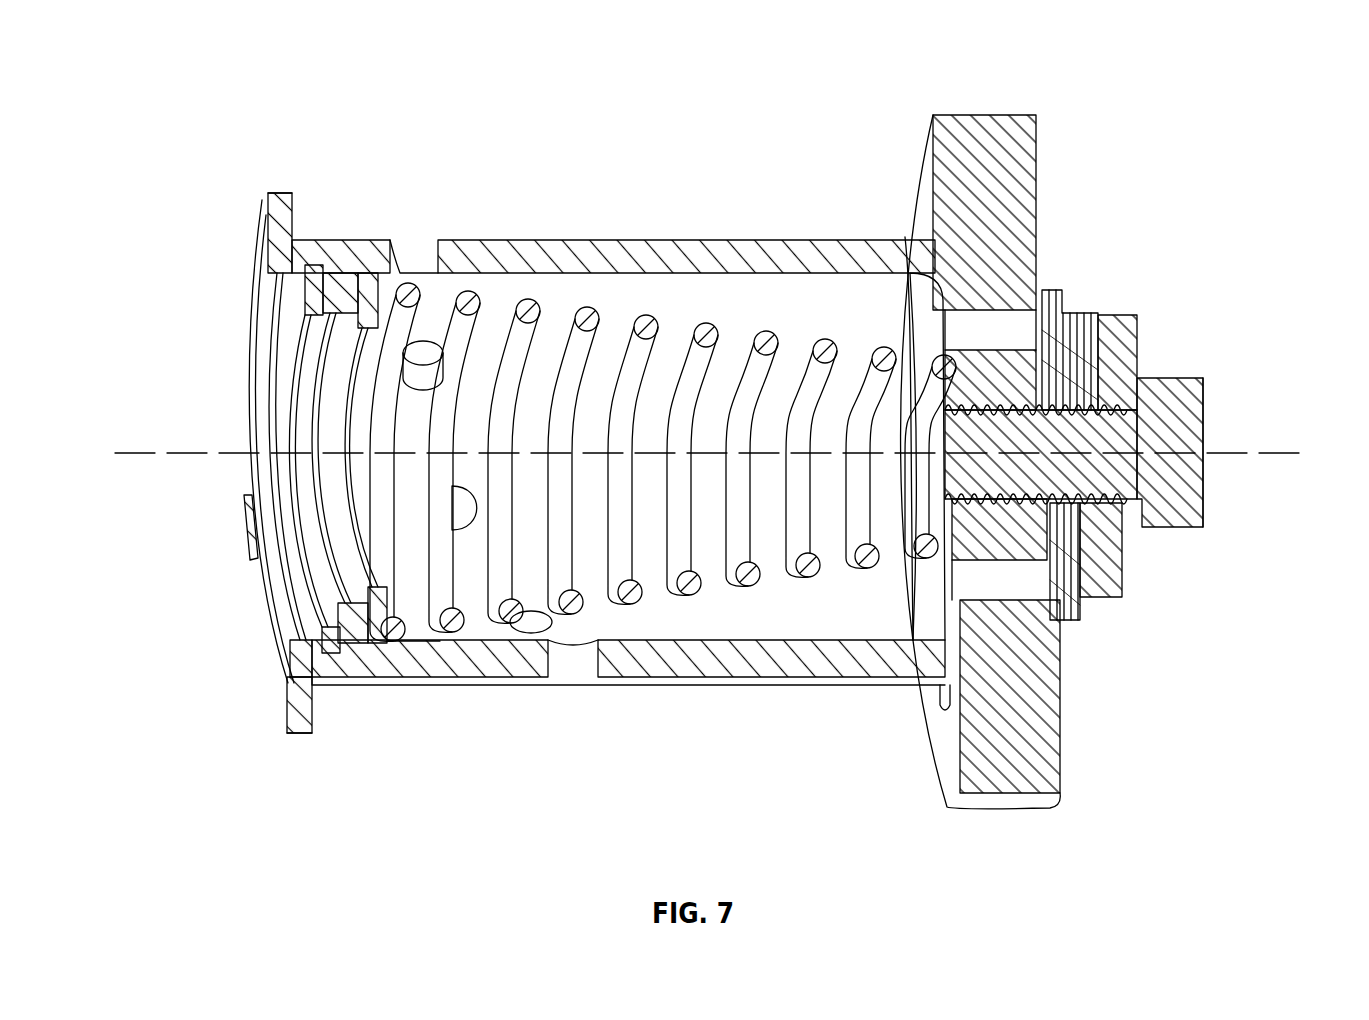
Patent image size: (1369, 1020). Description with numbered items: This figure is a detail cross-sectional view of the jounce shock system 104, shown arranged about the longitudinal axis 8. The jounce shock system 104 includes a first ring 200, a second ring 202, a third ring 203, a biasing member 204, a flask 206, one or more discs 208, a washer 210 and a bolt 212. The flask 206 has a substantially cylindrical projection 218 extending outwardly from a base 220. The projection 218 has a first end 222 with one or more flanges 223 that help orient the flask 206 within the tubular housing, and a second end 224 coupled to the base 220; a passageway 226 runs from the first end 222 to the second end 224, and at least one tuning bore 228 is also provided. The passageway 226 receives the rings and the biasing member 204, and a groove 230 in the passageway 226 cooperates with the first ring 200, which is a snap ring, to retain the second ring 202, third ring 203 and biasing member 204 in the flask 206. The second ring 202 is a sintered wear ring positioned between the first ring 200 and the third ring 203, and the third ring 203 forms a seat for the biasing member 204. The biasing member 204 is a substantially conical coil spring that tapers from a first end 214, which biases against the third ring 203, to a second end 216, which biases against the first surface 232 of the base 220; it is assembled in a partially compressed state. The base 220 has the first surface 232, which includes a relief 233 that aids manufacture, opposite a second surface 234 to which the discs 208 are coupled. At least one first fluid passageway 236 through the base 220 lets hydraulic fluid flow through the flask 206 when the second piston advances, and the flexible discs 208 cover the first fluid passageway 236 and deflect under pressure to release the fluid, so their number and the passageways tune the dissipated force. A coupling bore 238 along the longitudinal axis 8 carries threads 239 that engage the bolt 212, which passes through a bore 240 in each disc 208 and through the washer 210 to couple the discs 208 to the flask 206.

The longitudinal axis 8 is at (1302, 453).
The jounce shock system 104 is at (1006, 60).
The first ring 200 is at (282, 432).
The second ring 202 is at (345, 283).
The third ring 203 is at (414, 285).
The biasing member 204 is at (683, 312).
The flask 206 is at (835, 812).
The discs 208 is at (1064, 244).
The washer 210 is at (1147, 312).
The bolt 212 is at (1202, 348).
The first end 214 is at (390, 645).
The second end 216 is at (922, 555).
The projection 218 is at (760, 757).
The base 220 is at (1035, 835).
The first end 222 is at (333, 805).
The flanges 223 is at (275, 200).
The second end 224 is at (1062, 738).
The passageway 226 is at (222, 657).
The tuning bore 228 is at (410, 296).
The groove 230 is at (345, 272).
The first surface 232 is at (872, 214).
The relief 233 is at (930, 703).
The second surface 234 is at (1040, 130).
The first fluid passageway 236 is at (948, 328).
The coupling bore 238 is at (1203, 518).
The threads 239 is at (1040, 395).
The bore 240 is at (1118, 405).